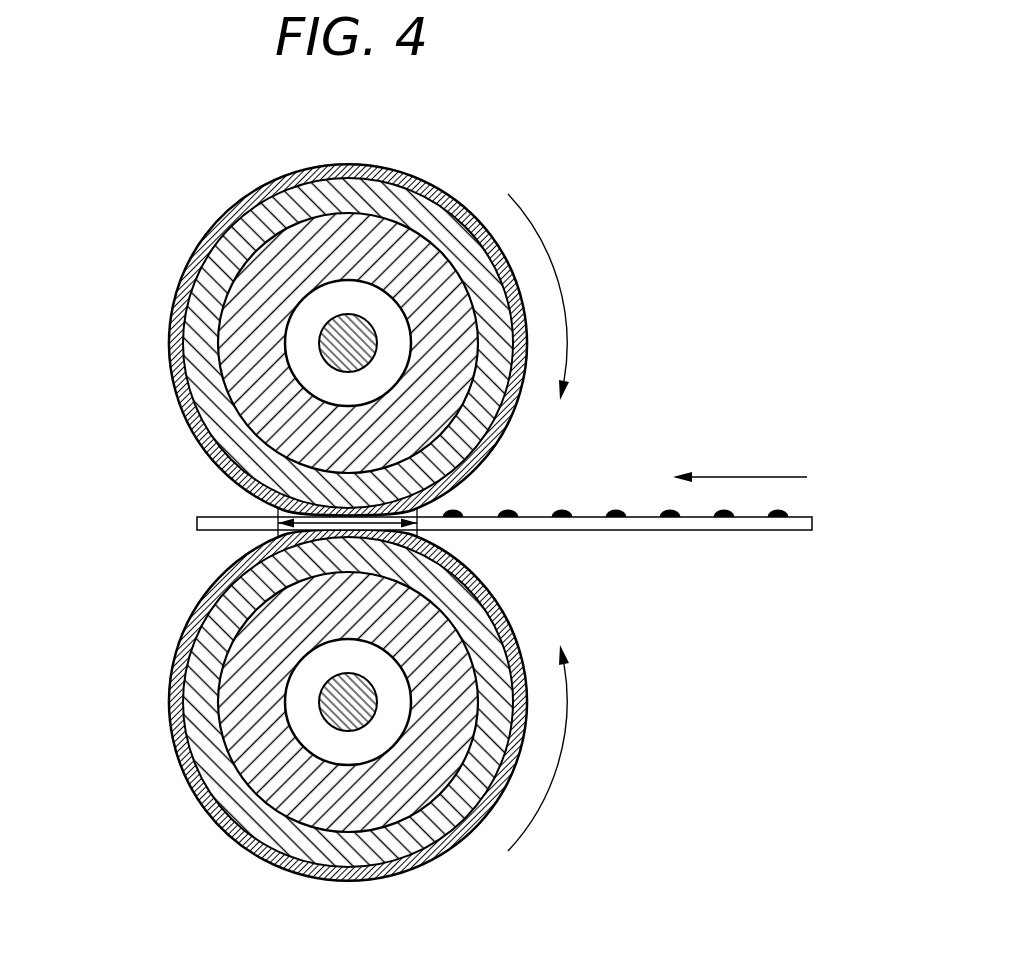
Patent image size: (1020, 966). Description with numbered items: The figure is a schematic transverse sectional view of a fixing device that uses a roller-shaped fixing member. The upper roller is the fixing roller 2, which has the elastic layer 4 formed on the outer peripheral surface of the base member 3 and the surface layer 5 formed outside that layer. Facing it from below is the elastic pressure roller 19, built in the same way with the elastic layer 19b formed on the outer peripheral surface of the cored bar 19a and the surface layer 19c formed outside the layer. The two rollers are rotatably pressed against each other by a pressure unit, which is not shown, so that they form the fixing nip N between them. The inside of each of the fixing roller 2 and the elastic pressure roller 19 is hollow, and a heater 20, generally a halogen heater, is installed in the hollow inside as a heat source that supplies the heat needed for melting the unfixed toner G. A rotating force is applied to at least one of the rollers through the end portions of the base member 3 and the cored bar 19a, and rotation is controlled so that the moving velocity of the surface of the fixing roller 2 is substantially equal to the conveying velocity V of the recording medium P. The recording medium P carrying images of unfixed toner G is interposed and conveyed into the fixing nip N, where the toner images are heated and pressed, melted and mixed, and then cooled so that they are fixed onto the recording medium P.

The fixing roller 2 is at (302, 339).
The base member 3 is at (268, 272).
The elastic layer 4 is at (197, 318).
The surface layer 5 is at (188, 380).
The elastic pressure roller 19 is at (283, 705).
The cored bar 19a is at (263, 632).
The elastic layer 19b is at (198, 678).
The surface layer 19c is at (178, 738).
The heater 20 is at (351, 336).
The fixing nip N is at (338, 524).
The recording medium P is at (588, 531).
The unfixed toner G is at (608, 510).
The conveying velocity V is at (740, 464).